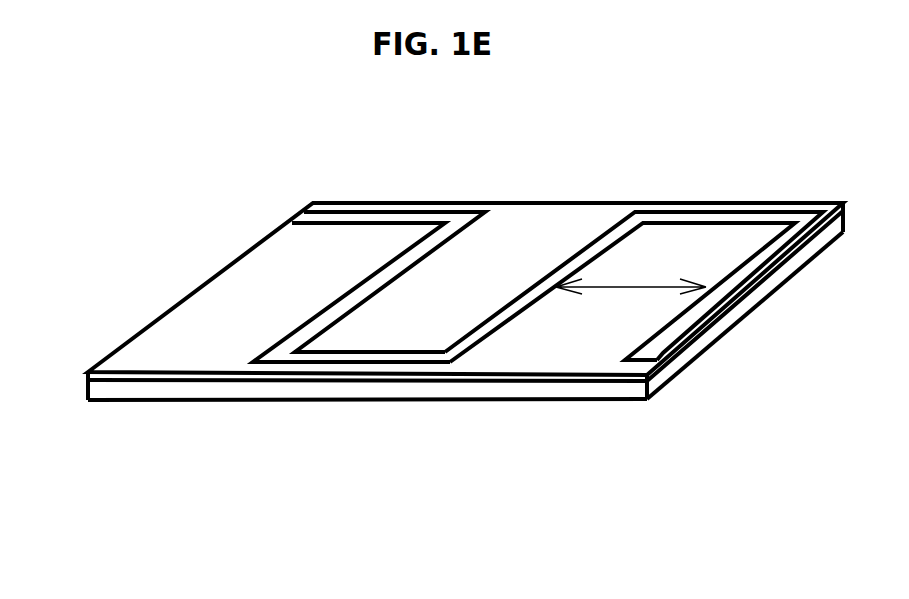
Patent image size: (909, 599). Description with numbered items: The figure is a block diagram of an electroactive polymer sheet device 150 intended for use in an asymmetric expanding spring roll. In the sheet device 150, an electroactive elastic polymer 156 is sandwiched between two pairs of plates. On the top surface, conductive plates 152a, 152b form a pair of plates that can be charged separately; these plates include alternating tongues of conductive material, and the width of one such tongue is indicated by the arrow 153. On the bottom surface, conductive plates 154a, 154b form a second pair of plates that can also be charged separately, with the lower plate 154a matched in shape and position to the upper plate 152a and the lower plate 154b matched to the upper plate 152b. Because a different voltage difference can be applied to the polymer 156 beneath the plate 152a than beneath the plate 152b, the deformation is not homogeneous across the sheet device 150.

The electroactive polymer sheet device 150 is at (177, 203).
The conductive plate 152a is at (137, 348).
The conductive plate 152b is at (530, 233).
The arrow 153 is at (662, 287).
The conductive plate 154a is at (207, 402).
The conductive plate 154b is at (743, 322).
The electroactive elastic polymer 156 is at (403, 386).